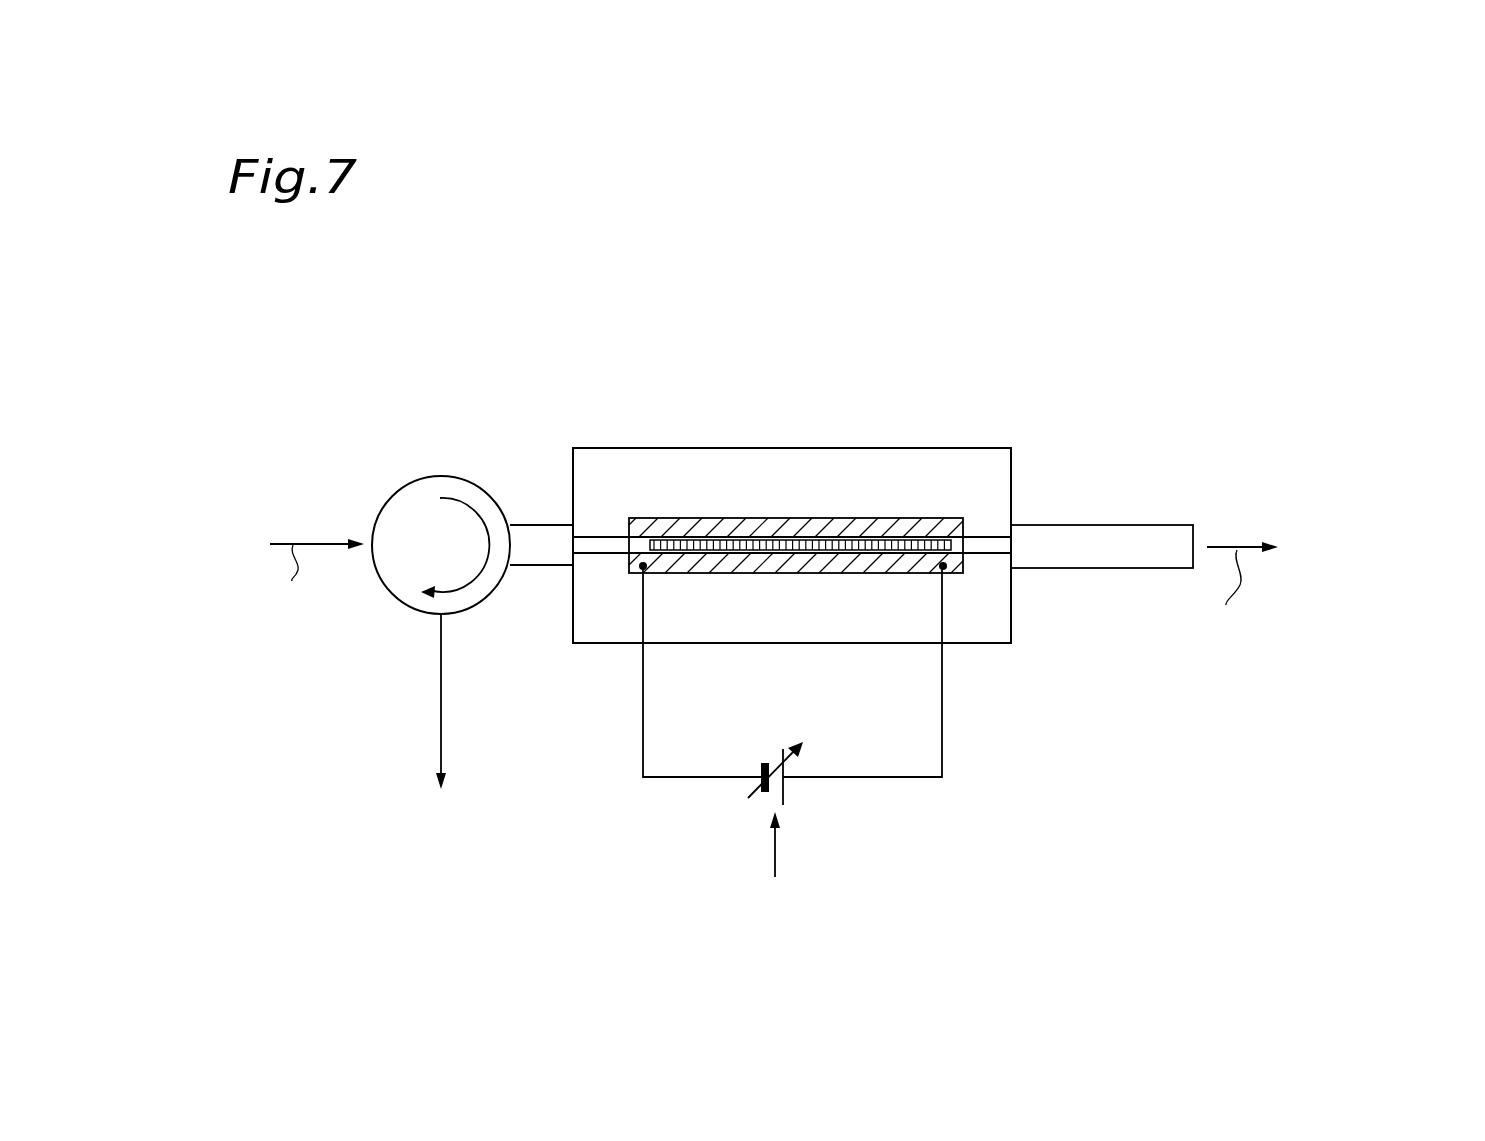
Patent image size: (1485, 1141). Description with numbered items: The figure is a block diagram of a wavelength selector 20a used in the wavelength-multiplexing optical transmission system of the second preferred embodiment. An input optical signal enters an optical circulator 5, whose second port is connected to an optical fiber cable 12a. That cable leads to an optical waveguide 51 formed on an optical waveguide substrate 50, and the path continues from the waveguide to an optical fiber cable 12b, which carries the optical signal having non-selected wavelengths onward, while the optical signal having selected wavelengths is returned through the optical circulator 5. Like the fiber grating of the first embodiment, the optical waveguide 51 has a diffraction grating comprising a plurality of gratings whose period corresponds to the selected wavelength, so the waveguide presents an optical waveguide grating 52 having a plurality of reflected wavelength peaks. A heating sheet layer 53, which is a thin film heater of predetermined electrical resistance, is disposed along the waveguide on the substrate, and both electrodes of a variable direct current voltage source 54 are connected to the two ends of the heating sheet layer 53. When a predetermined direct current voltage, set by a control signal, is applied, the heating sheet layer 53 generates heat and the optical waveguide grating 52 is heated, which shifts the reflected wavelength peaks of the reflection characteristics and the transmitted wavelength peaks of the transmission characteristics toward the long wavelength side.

The wavelength selector 20a is at (565, 263).
The optical circulator 5 is at (441, 475).
The optical fiber cable 12a is at (538, 553).
The optical fiber cable 12b is at (1087, 553).
The optical waveguide substrate 50 is at (831, 463).
The optical waveguide 51 is at (601, 524).
The optical waveguide grating 52 is at (695, 523).
The heating sheet layer 53 is at (640, 522).
The variable direct current voltage source 54 is at (783, 790).